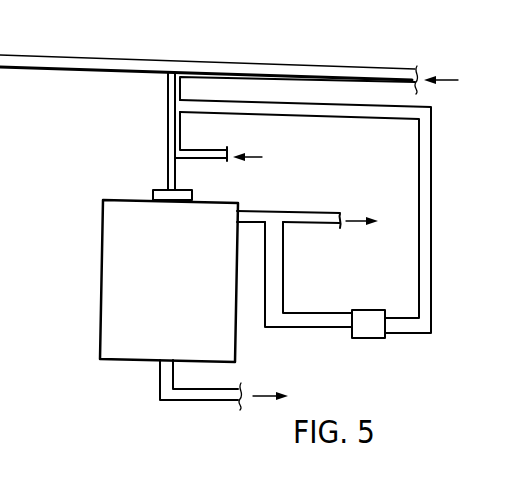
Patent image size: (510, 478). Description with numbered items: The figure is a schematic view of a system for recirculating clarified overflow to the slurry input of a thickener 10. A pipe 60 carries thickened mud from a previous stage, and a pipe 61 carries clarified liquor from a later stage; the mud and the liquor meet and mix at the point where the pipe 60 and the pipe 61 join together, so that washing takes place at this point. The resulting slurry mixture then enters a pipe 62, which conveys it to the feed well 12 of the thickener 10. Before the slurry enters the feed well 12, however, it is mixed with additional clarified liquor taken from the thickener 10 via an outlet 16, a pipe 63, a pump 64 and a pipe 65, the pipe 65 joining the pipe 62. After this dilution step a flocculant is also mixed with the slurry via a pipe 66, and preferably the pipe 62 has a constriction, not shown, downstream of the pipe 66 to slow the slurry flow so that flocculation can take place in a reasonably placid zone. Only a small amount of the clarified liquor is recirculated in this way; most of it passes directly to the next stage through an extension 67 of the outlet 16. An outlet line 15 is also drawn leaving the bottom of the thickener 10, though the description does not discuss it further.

The thickener 10 is at (102, 250).
The feed well 12 is at (152, 194).
The outlet line 15 is at (158, 370).
The outlet 16 is at (262, 210).
The pipe 60 is at (40, 72).
The pipe 61 is at (414, 84).
The pipe 62 is at (165, 92).
The pipe 63 is at (280, 283).
The pump 64 is at (377, 310).
The pipe 65 is at (393, 117).
The pipe 66 is at (212, 150).
The extension 67 is at (327, 213).